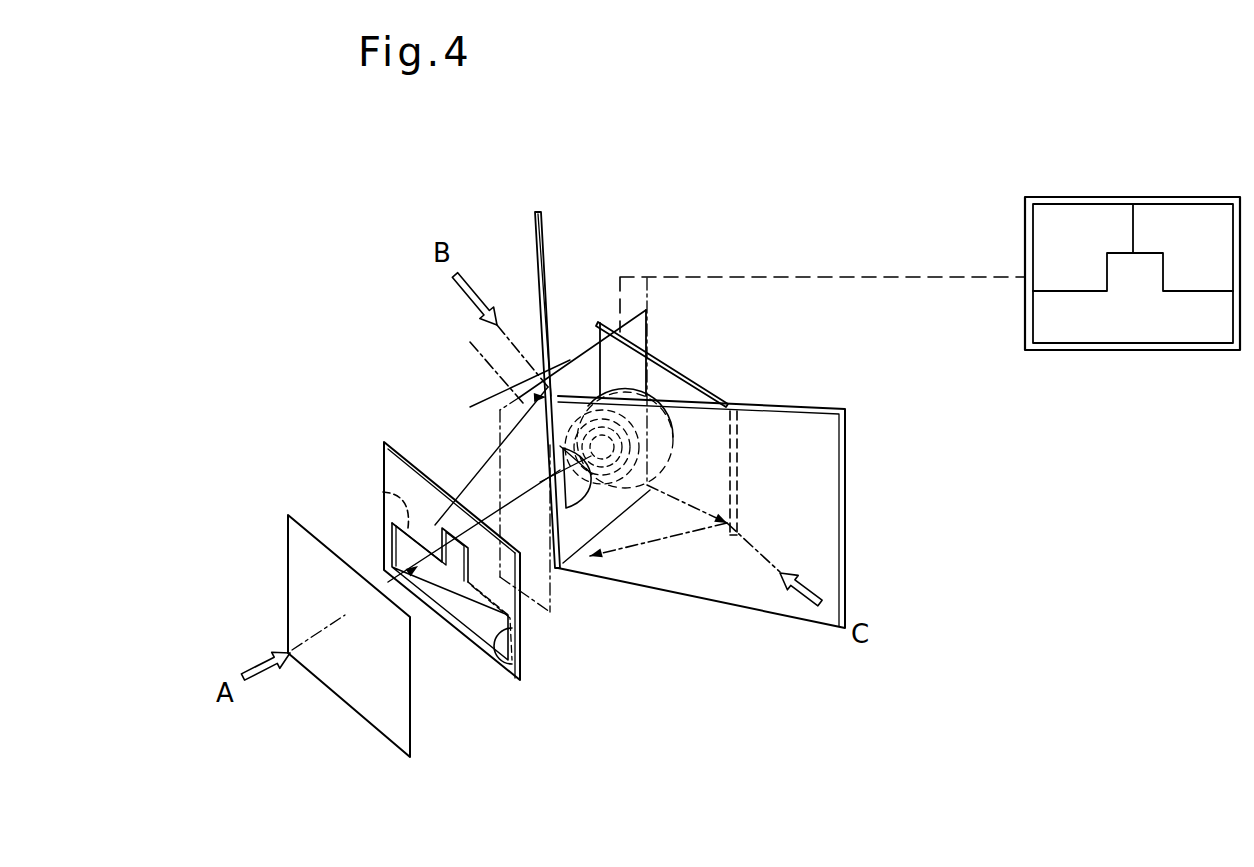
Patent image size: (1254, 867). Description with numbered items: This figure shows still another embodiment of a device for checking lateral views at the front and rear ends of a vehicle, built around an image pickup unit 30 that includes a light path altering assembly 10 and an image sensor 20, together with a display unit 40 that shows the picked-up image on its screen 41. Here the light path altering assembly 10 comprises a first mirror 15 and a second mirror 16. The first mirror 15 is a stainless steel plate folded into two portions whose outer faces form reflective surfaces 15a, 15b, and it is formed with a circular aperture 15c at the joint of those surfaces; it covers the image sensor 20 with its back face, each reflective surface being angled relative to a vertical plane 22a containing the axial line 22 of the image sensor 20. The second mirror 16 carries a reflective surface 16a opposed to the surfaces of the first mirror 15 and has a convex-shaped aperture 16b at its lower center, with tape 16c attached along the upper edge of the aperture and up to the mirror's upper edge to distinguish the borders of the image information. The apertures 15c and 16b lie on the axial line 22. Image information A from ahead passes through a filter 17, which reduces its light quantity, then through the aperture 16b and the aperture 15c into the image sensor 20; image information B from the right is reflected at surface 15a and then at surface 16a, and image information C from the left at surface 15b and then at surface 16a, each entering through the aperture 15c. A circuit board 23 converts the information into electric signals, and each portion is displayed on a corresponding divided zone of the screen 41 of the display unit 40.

The light path altering assembly 10 is at (603, 662).
The first mirror 15 is at (655, 423).
The reflective surface 15a is at (537, 322).
The reflective surface 15b is at (702, 571).
The circular aperture 15c is at (585, 498).
The second mirror 16 is at (407, 548).
The reflective surface 16a is at (418, 475).
The convex-shaped aperture 16b is at (505, 633).
The tape 16c is at (385, 497).
The filter 17 is at (375, 697).
The image sensor 20 is at (653, 357).
The axial line 22 is at (484, 477).
The vertical plane 22a is at (470, 342).
The circuit board 23 is at (693, 375).
The image pickup unit 30 is at (337, 337).
The display unit 40 is at (930, 268).
The screen 41 is at (1178, 326).